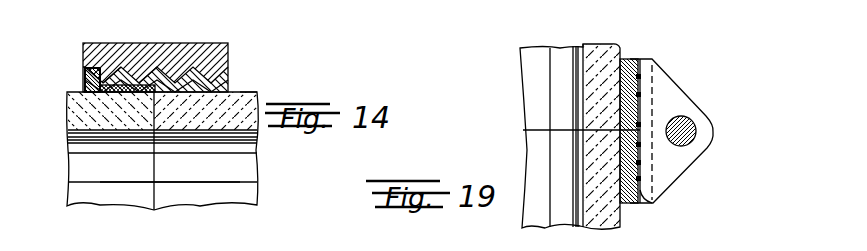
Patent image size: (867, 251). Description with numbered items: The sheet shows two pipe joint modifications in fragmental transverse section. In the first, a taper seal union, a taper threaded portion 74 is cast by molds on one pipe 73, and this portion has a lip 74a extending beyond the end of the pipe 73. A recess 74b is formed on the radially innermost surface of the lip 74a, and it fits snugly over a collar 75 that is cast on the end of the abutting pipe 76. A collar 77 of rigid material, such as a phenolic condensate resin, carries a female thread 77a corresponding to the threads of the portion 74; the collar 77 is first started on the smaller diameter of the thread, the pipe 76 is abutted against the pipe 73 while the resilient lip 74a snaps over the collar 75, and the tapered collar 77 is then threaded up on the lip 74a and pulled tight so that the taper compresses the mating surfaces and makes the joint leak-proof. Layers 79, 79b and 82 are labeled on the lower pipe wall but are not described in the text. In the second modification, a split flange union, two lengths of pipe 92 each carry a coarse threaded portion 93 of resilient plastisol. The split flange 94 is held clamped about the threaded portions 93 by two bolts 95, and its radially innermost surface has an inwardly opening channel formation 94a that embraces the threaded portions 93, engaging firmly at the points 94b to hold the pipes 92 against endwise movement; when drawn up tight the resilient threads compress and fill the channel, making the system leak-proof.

In FIG. 14, the pipe 73 is at (247, 97).
In FIG. 14, the taper threaded portion 74 is at (198, 77).
In FIG. 14, the lip 74a is at (85, 82).
In FIG. 14, the recess 74b is at (115, 70).
In FIG. 14, the collar 75 is at (108, 90).
In FIG. 14, the pipe 76 is at (77, 113).
In FIG. 14, the collar 77 is at (170, 55).
In FIG. 14, the female thread 77a is at (143, 72).
In FIG. 14, the layer 79 is at (220, 216).
In FIG. 14, the layer 79b is at (127, 216).
In FIG. 14, the layer 82 is at (177, 216).
In FIG. 19, the pipe 92 is at (600, 46).
In FIG. 19, the threaded portion 93 is at (638, 95).
In FIG. 19, the split flange 94 is at (678, 163).
In FIG. 19, the channel formation 94a is at (640, 97).
In FIG. 19, the points 94b is at (636, 78).
In FIG. 19, the bolts 95 is at (693, 130).